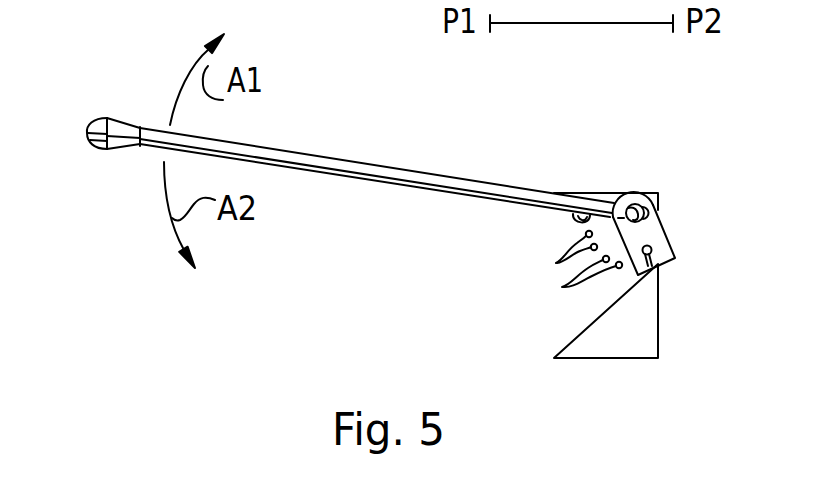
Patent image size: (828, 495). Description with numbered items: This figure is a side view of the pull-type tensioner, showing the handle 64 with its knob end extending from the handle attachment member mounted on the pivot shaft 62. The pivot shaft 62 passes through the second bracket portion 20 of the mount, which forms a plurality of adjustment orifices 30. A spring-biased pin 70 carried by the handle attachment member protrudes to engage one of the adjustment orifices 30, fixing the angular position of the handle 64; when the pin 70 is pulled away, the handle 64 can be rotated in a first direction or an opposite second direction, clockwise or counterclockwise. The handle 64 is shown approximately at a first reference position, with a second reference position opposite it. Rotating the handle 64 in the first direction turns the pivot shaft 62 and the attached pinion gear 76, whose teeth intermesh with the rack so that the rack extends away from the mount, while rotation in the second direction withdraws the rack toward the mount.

The second bracket portion 20 is at (641, 332).
The adjustment orifices 30 is at (556, 263).
The pivot shaft 62 is at (636, 207).
The handle 64 is at (388, 181).
The pin 70 is at (670, 263).
The pinion gear 76 is at (640, 229).